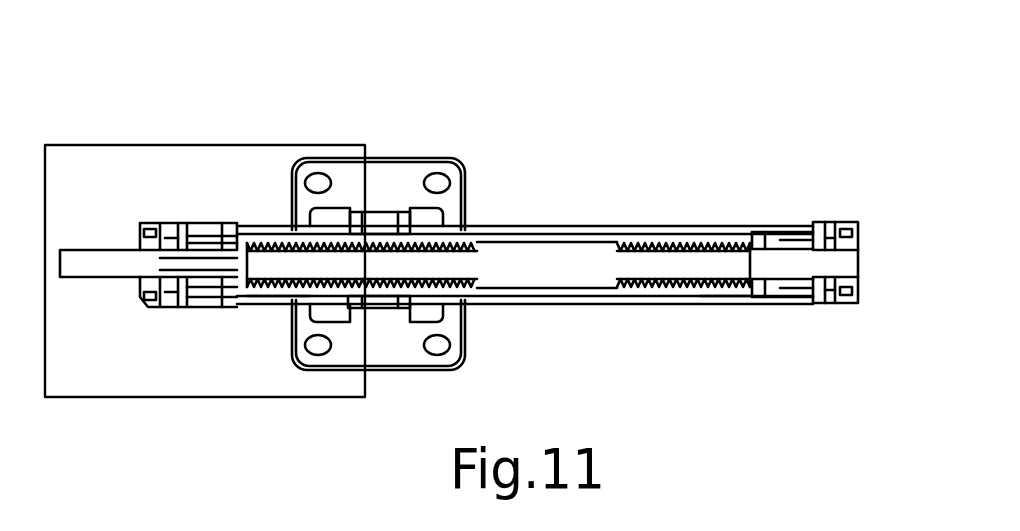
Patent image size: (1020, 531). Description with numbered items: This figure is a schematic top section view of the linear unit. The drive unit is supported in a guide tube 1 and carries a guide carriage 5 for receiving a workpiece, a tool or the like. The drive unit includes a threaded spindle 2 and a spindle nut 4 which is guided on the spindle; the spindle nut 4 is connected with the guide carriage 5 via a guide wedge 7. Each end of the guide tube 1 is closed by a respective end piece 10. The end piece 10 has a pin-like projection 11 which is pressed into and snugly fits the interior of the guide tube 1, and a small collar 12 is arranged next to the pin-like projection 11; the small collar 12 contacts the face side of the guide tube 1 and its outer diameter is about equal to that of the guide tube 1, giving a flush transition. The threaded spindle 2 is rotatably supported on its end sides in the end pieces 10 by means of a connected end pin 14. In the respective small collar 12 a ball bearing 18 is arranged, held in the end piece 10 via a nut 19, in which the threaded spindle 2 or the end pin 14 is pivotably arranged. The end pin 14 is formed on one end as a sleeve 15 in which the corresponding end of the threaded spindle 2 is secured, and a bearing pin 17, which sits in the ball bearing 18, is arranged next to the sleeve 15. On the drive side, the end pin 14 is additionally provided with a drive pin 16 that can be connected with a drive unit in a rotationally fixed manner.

The guide tube 1 is at (513, 226).
The threaded spindle 2 is at (631, 265).
The spindle nut 4 is at (388, 300).
The guide carriage 5 is at (398, 182).
The guide wedge 7 is at (374, 228).
The end piece 10 is at (155, 317).
The pin-like projection 11 is at (222, 240).
The small collar 12 is at (140, 305).
The end pin 14 is at (205, 240).
The sleeve 15 is at (265, 290).
The drive pin 16 is at (73, 262).
The bearing pin 17 is at (193, 262).
The ball bearing 18 is at (173, 243).
The nut 19 is at (150, 235).